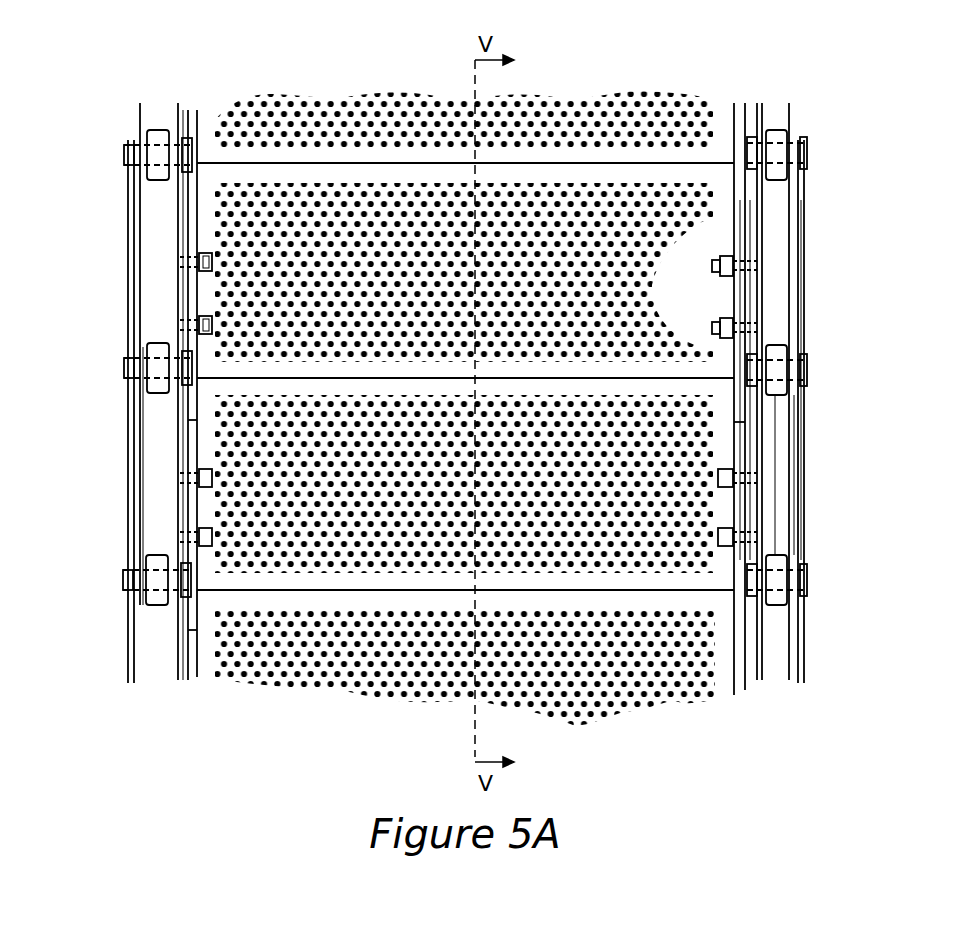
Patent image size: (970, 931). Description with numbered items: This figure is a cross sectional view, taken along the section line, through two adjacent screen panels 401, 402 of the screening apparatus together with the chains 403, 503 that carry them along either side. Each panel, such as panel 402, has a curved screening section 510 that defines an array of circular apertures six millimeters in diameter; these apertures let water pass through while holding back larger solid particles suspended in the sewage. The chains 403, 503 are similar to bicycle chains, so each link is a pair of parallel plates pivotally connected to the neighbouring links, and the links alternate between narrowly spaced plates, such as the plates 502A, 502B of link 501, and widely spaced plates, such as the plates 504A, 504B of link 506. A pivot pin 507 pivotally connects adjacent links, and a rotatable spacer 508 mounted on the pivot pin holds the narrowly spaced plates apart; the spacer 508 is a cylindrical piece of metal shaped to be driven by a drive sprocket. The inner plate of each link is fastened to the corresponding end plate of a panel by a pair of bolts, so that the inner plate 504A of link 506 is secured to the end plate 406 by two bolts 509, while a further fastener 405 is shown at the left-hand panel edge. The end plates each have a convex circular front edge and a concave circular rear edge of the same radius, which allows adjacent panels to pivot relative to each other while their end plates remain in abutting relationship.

The screen panel 401 is at (203, 440).
The screen panel 402 is at (203, 207).
The chain 403 is at (769, 678).
The panel fastener 405 is at (195, 285).
The end plate 406 is at (745, 232).
The link 501 is at (812, 535).
The plate 502A is at (760, 443).
The plate 502B is at (797, 493).
The chain 503 is at (153, 678).
The inner plate 504A is at (750, 308).
The plate 504B is at (799, 348).
The link 506 is at (822, 195).
The pivot pin 507 is at (808, 160).
The spacer 508 is at (776, 133).
The bolt 509 is at (748, 273).
The curved screening section 510 is at (277, 298).